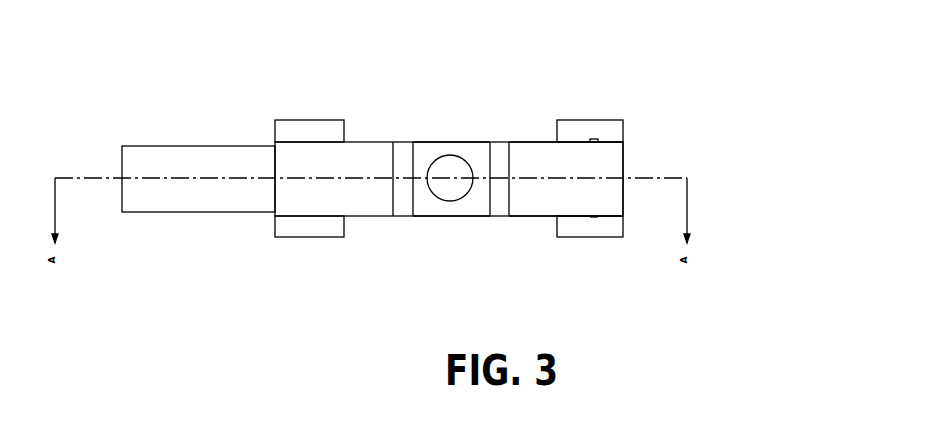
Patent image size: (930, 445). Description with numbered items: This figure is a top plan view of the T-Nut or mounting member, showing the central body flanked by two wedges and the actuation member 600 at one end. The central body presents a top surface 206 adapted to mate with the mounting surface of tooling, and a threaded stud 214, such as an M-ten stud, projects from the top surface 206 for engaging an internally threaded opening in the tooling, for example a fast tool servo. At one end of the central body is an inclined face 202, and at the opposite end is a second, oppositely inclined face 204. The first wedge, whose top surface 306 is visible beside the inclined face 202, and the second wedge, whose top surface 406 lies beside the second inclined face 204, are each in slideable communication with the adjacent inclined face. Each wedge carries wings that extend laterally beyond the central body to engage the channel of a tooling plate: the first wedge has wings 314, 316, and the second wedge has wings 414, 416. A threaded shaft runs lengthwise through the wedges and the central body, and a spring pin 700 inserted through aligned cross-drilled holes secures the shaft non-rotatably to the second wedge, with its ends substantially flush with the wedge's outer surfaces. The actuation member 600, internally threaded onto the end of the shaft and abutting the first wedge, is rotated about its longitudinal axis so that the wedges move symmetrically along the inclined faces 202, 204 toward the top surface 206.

The actuation member 600 is at (192, 148).
The top surface 306 is at (305, 163).
The wing 316 is at (307, 128).
The wing 314 is at (313, 230).
The inclined face 202 is at (402, 208).
The threaded stud 214 is at (450, 172).
The top surface 206 is at (470, 208).
The second inclined face 204 is at (500, 150).
The spring pin 700 is at (593, 138).
The wing 416 is at (595, 130).
The wing 414 is at (600, 230).
The top surface 406 is at (595, 163).